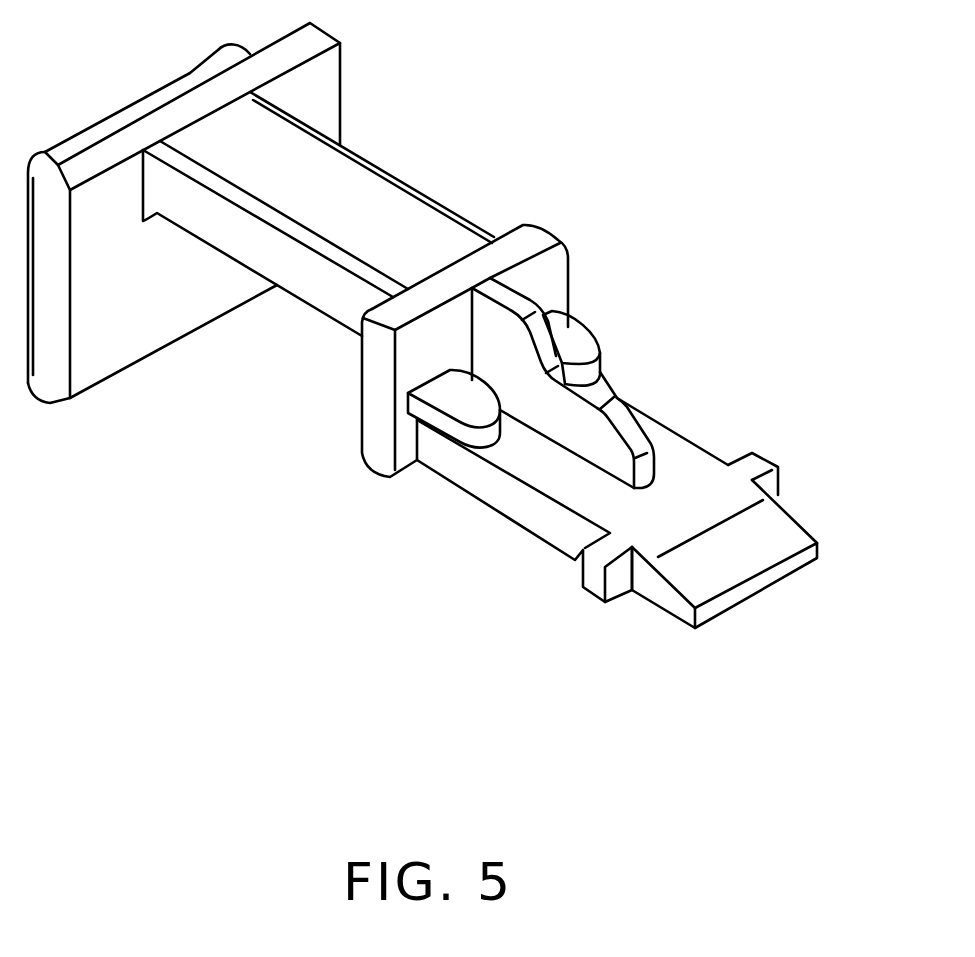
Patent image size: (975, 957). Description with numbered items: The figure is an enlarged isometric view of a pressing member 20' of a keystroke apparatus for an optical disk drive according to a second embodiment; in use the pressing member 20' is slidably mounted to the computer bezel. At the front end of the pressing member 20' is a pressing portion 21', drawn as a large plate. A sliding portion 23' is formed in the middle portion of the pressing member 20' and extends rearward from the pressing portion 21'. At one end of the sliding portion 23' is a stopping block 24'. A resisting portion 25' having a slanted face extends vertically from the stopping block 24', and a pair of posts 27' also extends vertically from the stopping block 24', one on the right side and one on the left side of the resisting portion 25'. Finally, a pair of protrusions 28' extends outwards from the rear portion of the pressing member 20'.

The pressing member 20' is at (462, 352).
The pressing portion 21' is at (184, 213).
The sliding portion 23' is at (341, 214).
The stopping block 24' is at (389, 351).
The resisting portion 25' is at (594, 440).
The posts 27' is at (586, 455).
The protrusions 28' is at (715, 567).